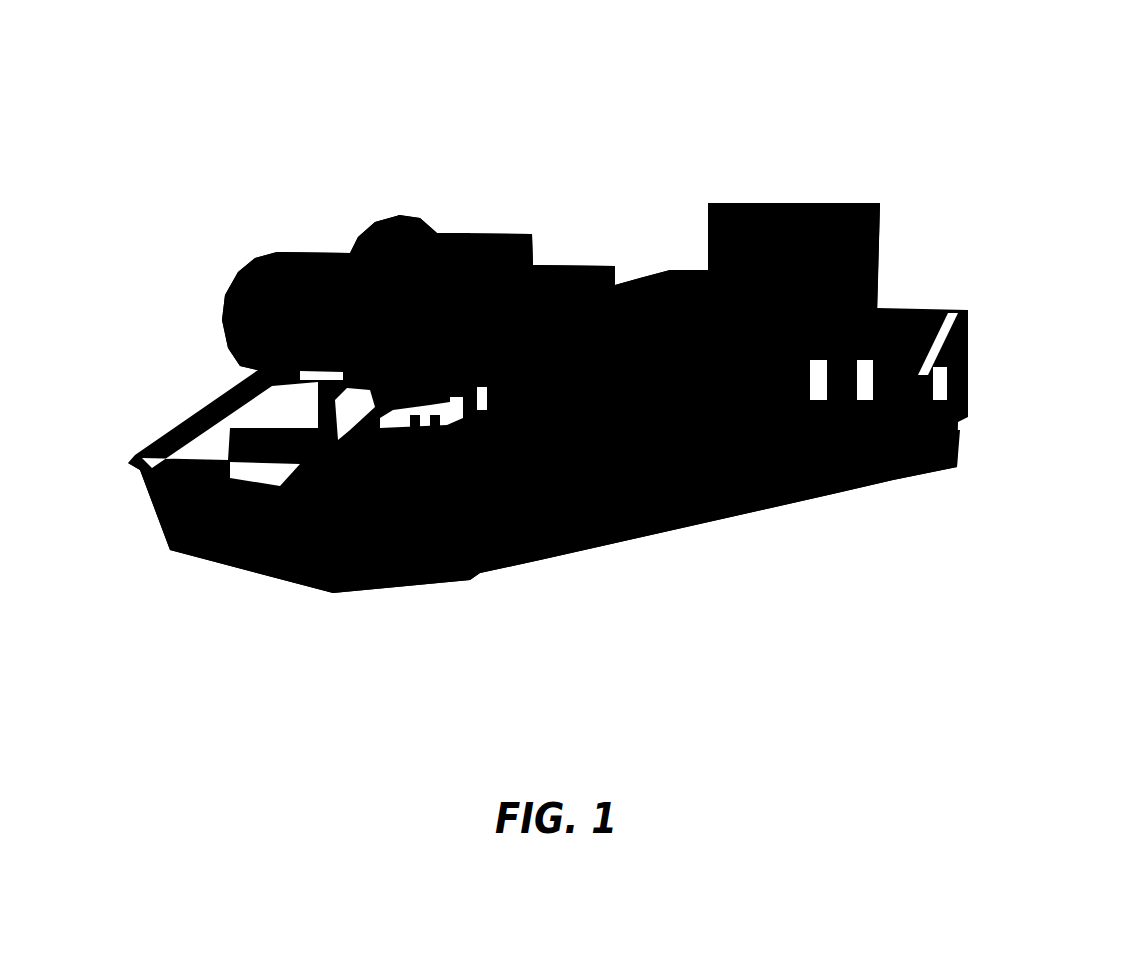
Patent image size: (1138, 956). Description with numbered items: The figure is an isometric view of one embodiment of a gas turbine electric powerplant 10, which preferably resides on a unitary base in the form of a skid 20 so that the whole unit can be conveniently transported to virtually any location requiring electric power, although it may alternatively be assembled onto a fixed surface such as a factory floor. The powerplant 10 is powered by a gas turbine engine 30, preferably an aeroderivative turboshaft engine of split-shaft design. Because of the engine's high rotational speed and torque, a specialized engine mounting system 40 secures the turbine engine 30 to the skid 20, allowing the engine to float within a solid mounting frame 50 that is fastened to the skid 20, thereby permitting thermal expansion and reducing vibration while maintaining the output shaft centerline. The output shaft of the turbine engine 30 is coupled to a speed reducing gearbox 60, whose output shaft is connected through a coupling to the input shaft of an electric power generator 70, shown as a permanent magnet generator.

The gas turbine electric powerplant 10 is at (1050, 128).
The skid 20 is at (683, 510).
The gas turbine engine 30 is at (299, 230).
The engine mounting system 40 is at (363, 201).
The mounting frame 50 is at (421, 216).
The speed reducing gearbox 60 is at (582, 246).
The generator 70 is at (791, 180).